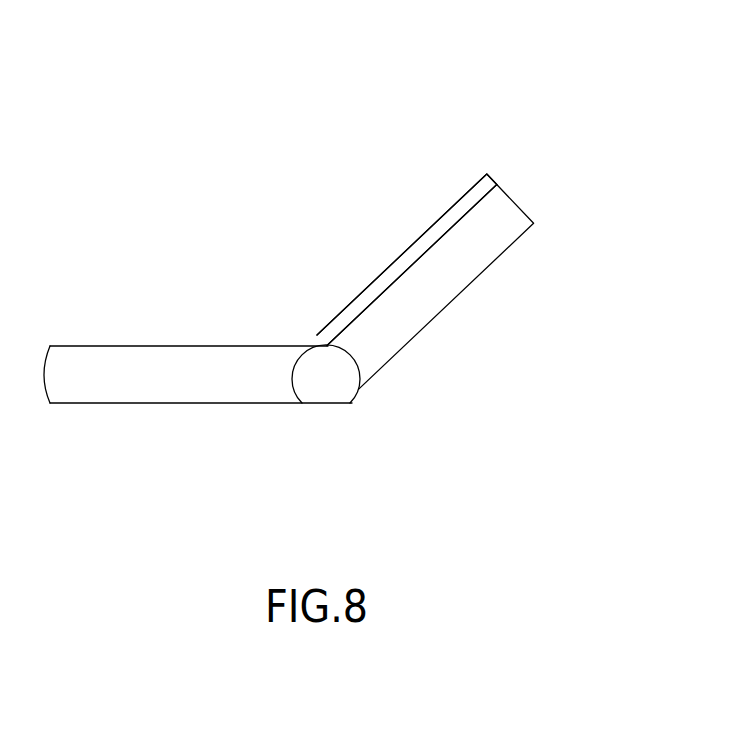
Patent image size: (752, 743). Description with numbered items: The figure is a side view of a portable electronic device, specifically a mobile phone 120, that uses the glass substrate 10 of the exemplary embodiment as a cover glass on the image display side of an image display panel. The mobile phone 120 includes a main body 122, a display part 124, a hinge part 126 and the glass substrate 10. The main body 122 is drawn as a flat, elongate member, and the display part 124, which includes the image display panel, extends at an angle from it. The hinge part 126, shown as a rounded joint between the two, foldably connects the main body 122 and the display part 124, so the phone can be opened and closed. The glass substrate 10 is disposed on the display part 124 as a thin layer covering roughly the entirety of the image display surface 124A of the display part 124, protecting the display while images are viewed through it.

The mobile phone 120 is at (553, 112).
The glass substrate 10 is at (473, 195).
The image display surface 124A is at (435, 224).
The display part 124 is at (487, 251).
The main body 122 is at (185, 380).
The hinge part 126 is at (330, 380).